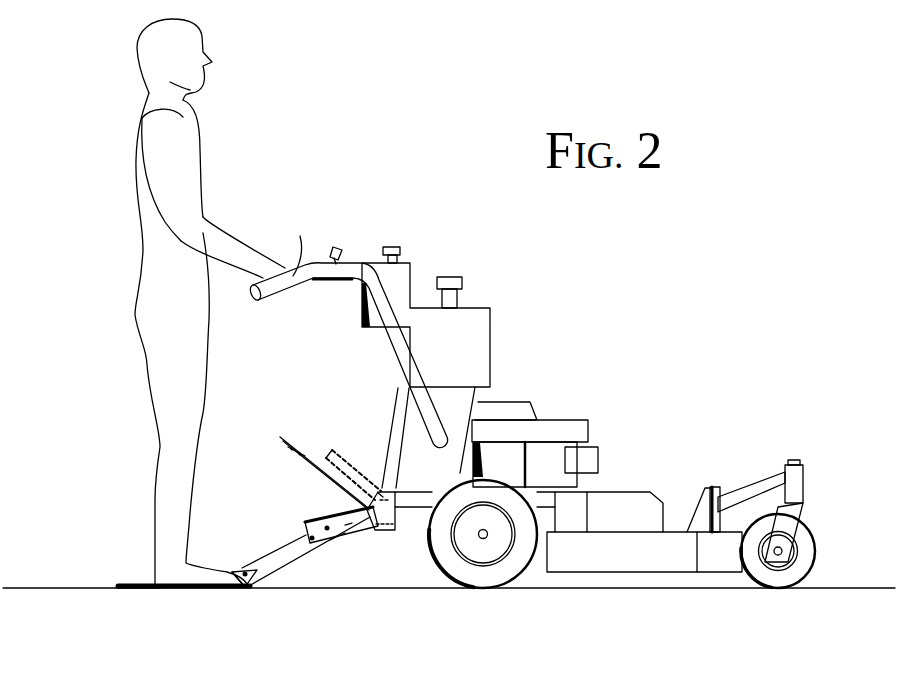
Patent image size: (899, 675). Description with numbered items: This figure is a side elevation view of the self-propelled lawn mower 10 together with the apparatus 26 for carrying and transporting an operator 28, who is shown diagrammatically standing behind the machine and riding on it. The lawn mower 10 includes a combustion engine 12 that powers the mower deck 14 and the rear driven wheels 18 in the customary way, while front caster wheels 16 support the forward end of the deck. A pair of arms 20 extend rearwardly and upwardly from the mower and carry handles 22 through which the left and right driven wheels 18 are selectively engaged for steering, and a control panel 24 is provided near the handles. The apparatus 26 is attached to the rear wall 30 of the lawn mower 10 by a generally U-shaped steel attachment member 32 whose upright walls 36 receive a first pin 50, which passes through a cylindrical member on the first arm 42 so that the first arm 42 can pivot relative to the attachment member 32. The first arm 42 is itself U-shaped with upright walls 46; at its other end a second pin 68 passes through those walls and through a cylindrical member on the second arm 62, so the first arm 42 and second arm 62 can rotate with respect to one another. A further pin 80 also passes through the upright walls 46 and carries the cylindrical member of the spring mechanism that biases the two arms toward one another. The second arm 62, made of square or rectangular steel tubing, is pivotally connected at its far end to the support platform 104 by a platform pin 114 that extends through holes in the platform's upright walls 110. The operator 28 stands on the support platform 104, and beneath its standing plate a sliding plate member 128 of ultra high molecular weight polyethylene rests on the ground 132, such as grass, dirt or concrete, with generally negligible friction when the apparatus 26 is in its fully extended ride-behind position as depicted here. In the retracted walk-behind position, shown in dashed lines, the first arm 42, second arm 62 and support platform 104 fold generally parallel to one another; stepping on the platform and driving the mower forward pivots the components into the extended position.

The self-propelled lawn mower 10 is at (640, 322).
The combustion engine 12 is at (568, 430).
The mower deck 14 is at (635, 500).
The front caster wheels 16 is at (803, 547).
The rear driven wheels 18 is at (498, 573).
The arms 20 is at (418, 373).
The handles 22 is at (292, 264).
The control panel 24 is at (360, 258).
The apparatus for carrying and transporting an operator 26 is at (253, 435).
The operator 28 is at (160, 144).
The rear wall 30 is at (391, 475).
The attachment member 32 is at (378, 488).
The upright walls 36 is at (383, 531).
The first arm 42 is at (335, 549).
The upright walls 46 is at (348, 524).
The first pin 50 is at (398, 521).
The second arm 62 is at (273, 556).
The second pin 68 is at (311, 535).
The pin 80 is at (326, 520).
The support platform 104 is at (138, 582).
The upright walls 110 is at (232, 572).
The platform pin 114 is at (243, 571).
The sliding plate member 128 is at (193, 590).
The ground 132 is at (66, 584).